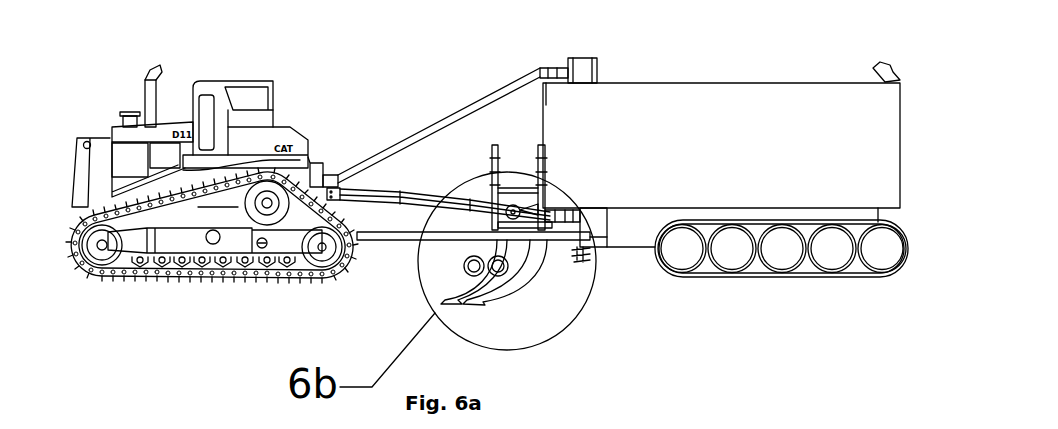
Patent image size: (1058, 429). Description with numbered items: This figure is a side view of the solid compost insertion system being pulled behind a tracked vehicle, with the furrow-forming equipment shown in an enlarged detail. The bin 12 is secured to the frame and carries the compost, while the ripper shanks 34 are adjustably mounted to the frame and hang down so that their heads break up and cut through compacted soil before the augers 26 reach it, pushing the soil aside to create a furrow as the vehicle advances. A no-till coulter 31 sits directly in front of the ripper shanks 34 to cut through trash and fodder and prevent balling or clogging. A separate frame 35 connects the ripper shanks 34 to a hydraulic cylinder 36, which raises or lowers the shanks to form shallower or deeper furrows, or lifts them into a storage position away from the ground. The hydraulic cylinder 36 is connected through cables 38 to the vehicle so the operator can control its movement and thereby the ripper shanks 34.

The bin 12 is at (715, 95).
The augers 26 is at (585, 262).
The no-till coulter 31 is at (465, 273).
The ripper shanks 34 is at (528, 277).
The separate frame 35 is at (557, 240).
The hydraulic cylinder 36 is at (538, 212).
The cables 38 is at (362, 188).